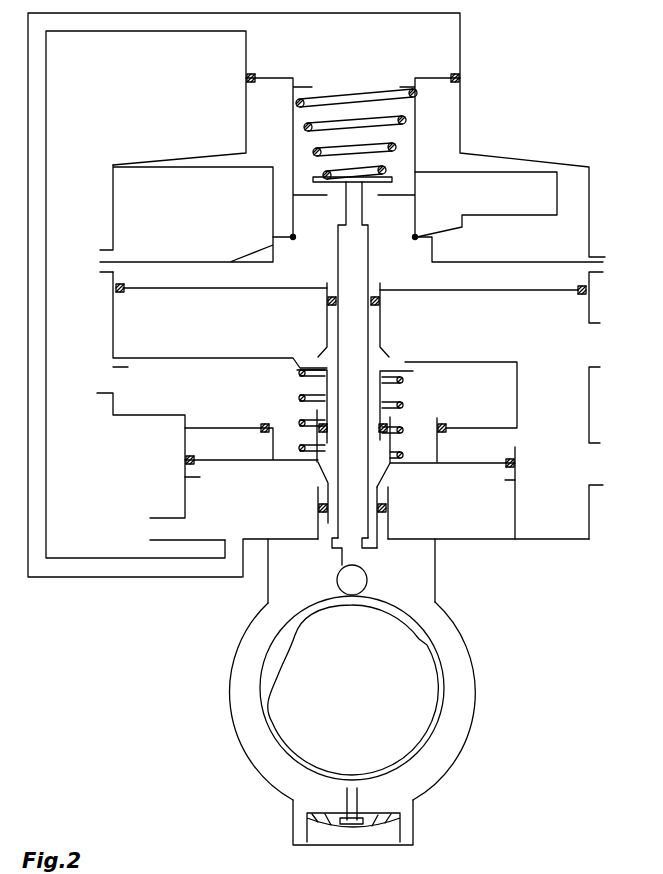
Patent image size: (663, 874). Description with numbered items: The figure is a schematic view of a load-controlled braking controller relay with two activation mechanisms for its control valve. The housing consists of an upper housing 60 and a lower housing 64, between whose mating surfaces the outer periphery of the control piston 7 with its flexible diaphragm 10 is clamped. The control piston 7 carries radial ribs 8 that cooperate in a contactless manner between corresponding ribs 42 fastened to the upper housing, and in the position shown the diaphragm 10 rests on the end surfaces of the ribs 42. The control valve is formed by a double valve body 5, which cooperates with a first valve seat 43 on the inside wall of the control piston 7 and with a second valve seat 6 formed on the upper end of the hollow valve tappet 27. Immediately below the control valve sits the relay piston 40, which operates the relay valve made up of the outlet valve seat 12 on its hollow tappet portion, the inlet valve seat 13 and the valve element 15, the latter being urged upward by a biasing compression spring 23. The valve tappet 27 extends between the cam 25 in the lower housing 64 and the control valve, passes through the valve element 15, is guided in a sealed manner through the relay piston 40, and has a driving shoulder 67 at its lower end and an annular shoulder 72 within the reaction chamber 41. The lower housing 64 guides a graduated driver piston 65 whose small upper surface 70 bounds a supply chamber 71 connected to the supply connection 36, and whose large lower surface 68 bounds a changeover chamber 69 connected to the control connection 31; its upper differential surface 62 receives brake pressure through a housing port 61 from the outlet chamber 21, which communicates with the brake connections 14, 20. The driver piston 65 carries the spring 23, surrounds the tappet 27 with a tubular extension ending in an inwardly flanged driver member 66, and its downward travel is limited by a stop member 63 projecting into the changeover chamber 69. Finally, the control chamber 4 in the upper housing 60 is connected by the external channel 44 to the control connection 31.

The control chamber 4 is at (440, 30).
The double valve body 5 is at (392, 178).
The second valve seat 6 is at (364, 183).
The control piston 7 is at (415, 183).
The radial ribs 8 is at (525, 186).
The flexible diaphragm 10 is at (490, 262).
The outlet valve seat 12 is at (323, 356).
The inlet valve seat 13 is at (402, 368).
The brake connection 14 is at (595, 347).
The valve element 15 is at (390, 393).
The brake connection 20 is at (593, 463).
The outlet chamber 21 is at (560, 482).
The biasing compression spring 23 is at (302, 388).
The cam 25 is at (420, 695).
The valve tappet 27 is at (358, 523).
The control connection 31 is at (157, 527).
The supply connection 36 is at (107, 377).
The relay piston 40 is at (135, 292).
The reaction chamber 41 is at (138, 266).
The ribs 42 is at (132, 190).
The first valve seat 43 is at (328, 183).
The external channel 44 is at (43, 70).
The upper housing 60 is at (593, 237).
The housing port 61 is at (516, 441).
The upper differential surface 62 is at (472, 462).
The stop member 63 is at (505, 480).
The lower housing 64 is at (589, 529).
The driver piston 65 is at (420, 464).
The driver member 66 is at (370, 548).
The driving shoulder 67 is at (333, 527).
The large lower surface 68 is at (207, 463).
The changeover chamber 69 is at (203, 498).
The small upper surface 70 is at (288, 450).
The supply chamber 71 is at (113, 368).
The annular shoulder 72 is at (289, 161).